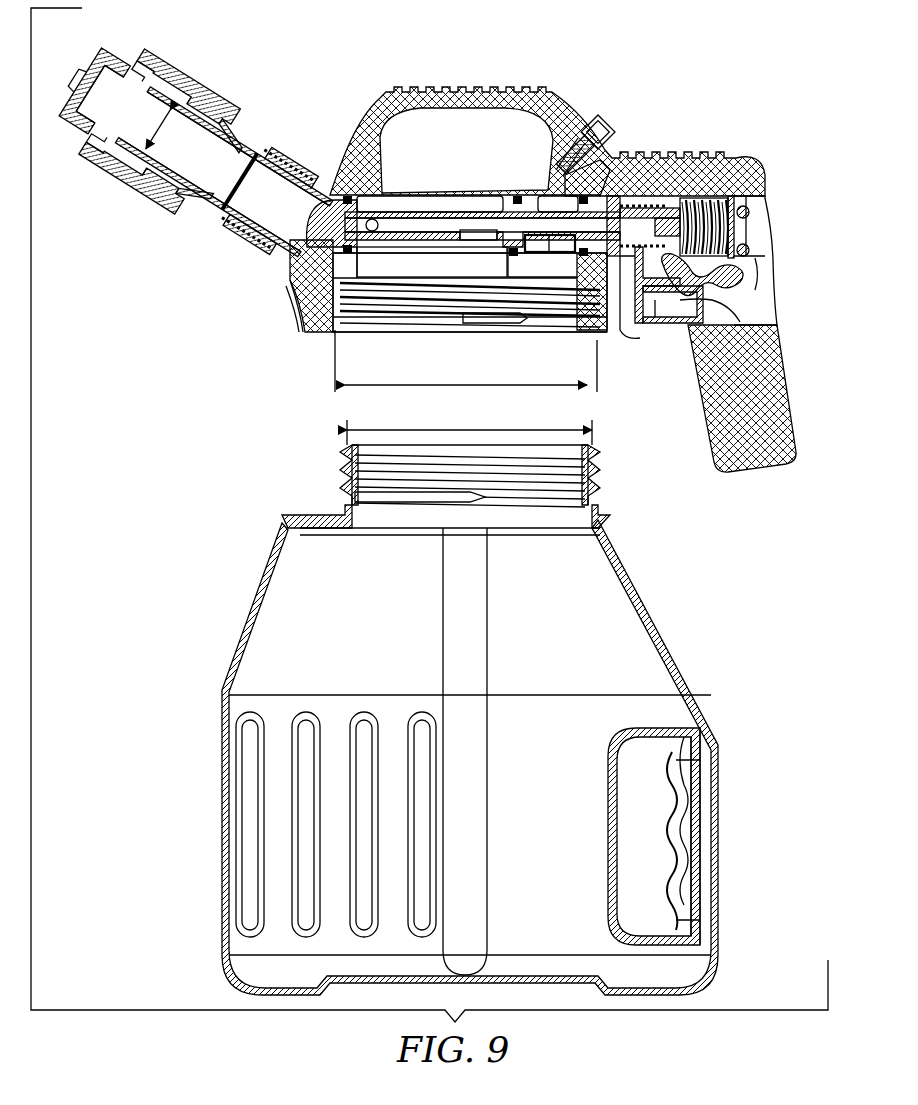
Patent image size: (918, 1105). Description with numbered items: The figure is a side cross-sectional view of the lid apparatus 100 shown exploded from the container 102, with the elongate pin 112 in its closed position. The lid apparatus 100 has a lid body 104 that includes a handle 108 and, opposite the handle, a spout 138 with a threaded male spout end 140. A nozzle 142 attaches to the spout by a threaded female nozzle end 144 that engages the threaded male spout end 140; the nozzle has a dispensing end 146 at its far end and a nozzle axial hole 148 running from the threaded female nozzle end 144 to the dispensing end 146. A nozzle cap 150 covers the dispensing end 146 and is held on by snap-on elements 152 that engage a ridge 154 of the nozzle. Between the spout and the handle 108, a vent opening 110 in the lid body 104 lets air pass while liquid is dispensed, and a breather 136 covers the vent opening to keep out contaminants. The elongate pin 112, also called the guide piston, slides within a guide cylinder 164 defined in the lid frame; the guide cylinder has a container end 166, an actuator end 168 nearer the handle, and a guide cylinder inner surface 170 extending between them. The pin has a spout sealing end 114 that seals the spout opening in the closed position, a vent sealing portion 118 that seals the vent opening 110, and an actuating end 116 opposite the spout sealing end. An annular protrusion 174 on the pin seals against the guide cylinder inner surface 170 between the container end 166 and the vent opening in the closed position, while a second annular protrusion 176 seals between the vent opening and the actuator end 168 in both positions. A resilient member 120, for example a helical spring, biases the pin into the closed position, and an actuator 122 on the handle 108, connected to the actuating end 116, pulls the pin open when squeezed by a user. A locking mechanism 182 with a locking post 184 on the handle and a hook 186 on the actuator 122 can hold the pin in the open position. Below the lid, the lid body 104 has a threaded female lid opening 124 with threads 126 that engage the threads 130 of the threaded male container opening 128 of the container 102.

The lid apparatus 100 is at (748, 102).
The container 102 is at (665, 635).
The lid body 104 is at (365, 165).
The handle 108 is at (770, 362).
The vent opening 110 is at (538, 100).
The elongate pin 112 is at (412, 214).
The spout sealing end 114 is at (358, 252).
The actuating end 116 is at (632, 294).
The vent sealing portion 118 is at (530, 250).
The resilient member 120 is at (705, 215).
The actuator 122 is at (676, 305).
The threaded female lid opening 124 is at (462, 385).
The threads 126 is at (318, 300).
The threaded male container opening 128 is at (466, 430).
The threads 130 is at (343, 494).
The breather 136 is at (608, 134).
The spout 138 is at (257, 222).
The threaded male spout end 140 is at (189, 161).
The nozzle 142 is at (182, 190).
The threaded female nozzle end 144 is at (242, 150).
The dispensing end 146 is at (90, 95).
The nozzle axial hole 148 is at (160, 105).
The nozzle cap 150 is at (68, 78).
The snap-on elements 152 is at (135, 172).
The ridge 154 is at (207, 110).
The guide cylinder 164 is at (558, 262).
The container end 166 is at (497, 250).
The actuator end 168 is at (655, 302).
The guide cylinder inner surface 170 is at (556, 245).
The annular protrusion 174 is at (515, 196).
The second annular protrusion 176 is at (612, 172).
The locking mechanism 182 is at (762, 262).
The locking post 184 is at (750, 212).
The hook 186 is at (762, 290).